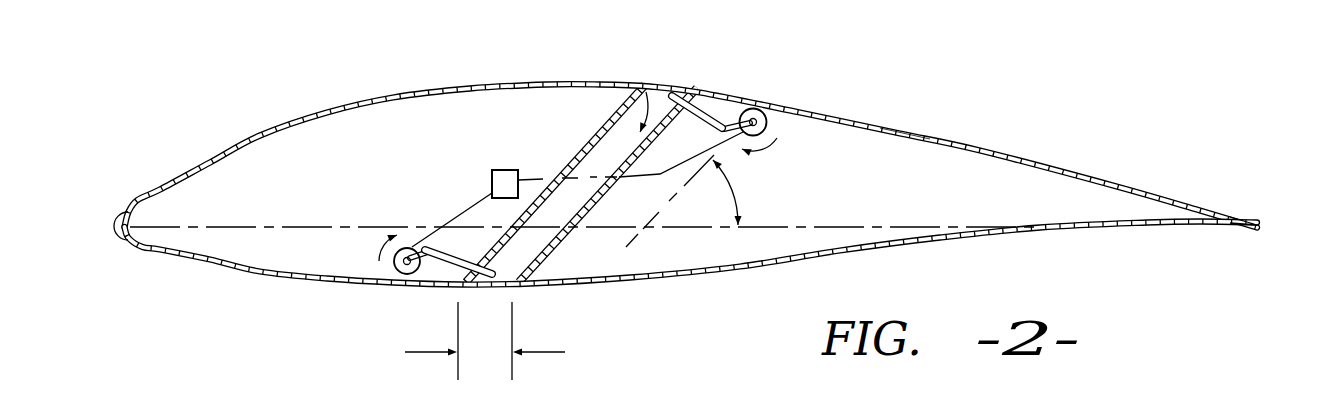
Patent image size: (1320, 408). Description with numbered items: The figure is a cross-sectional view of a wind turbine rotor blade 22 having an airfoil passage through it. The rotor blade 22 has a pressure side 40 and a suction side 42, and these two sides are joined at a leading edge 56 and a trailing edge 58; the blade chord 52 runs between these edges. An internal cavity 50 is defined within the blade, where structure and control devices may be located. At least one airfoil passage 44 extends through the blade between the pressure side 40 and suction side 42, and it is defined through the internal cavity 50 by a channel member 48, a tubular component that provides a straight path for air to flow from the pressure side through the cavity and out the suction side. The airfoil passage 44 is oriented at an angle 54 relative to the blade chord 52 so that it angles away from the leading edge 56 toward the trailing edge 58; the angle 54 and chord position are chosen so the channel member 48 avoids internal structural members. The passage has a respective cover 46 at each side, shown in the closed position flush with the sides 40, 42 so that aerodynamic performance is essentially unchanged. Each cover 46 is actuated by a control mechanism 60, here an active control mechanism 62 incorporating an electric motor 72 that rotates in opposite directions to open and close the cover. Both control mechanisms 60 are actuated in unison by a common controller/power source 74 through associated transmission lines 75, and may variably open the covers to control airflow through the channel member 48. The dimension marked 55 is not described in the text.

The rotor blade 22 is at (691, 180).
The pressure side 40 is at (237, 270).
The suction side 42 is at (393, 93).
The airfoil passage 44 is at (643, 83).
The cover 46 is at (688, 86).
The channel member 48 is at (595, 138).
The internal cavity 50 is at (905, 148).
The blade chord 52 is at (193, 225).
The angle 54 is at (738, 180).
The spar spacing width 55 is at (565, 352).
The leading edge 56 is at (118, 228).
The trailing edge 58 is at (1257, 225).
The control mechanism 60 is at (403, 290).
The active control mechanism 62 is at (410, 247).
The electric motor 72 is at (757, 108).
The controller/power source 74 is at (502, 170).
The transmission line 75 is at (672, 175).